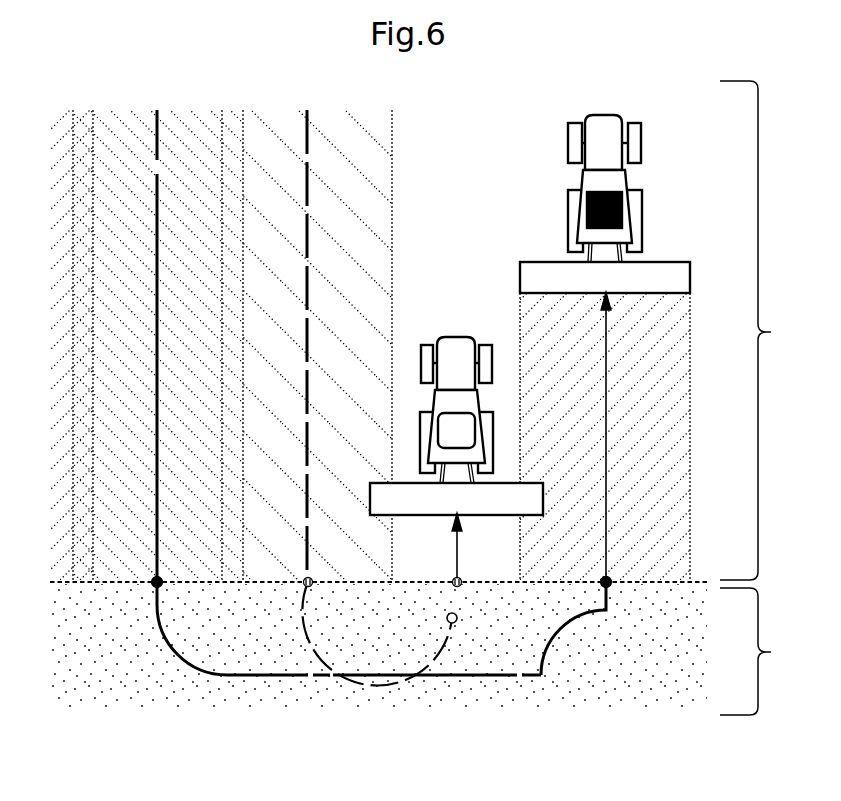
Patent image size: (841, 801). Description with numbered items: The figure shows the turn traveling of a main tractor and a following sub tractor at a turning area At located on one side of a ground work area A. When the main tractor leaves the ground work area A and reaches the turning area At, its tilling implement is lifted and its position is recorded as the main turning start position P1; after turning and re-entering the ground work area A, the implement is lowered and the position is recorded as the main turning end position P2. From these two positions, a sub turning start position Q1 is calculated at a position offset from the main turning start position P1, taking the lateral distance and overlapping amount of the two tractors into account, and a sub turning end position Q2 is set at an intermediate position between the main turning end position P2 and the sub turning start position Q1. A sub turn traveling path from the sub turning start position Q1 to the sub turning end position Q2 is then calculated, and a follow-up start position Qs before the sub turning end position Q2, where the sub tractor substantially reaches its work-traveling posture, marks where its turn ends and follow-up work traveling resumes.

The main turning start position P1 is at (153, 586).
The main turning end position P2 is at (610, 586).
The sub turning start position Q1 is at (305, 587).
The sub turning end position Q2 is at (460, 586).
The follow-up start position Qs is at (447, 616).
The ground work area A is at (423, 331).
The turning area At is at (426, 649).